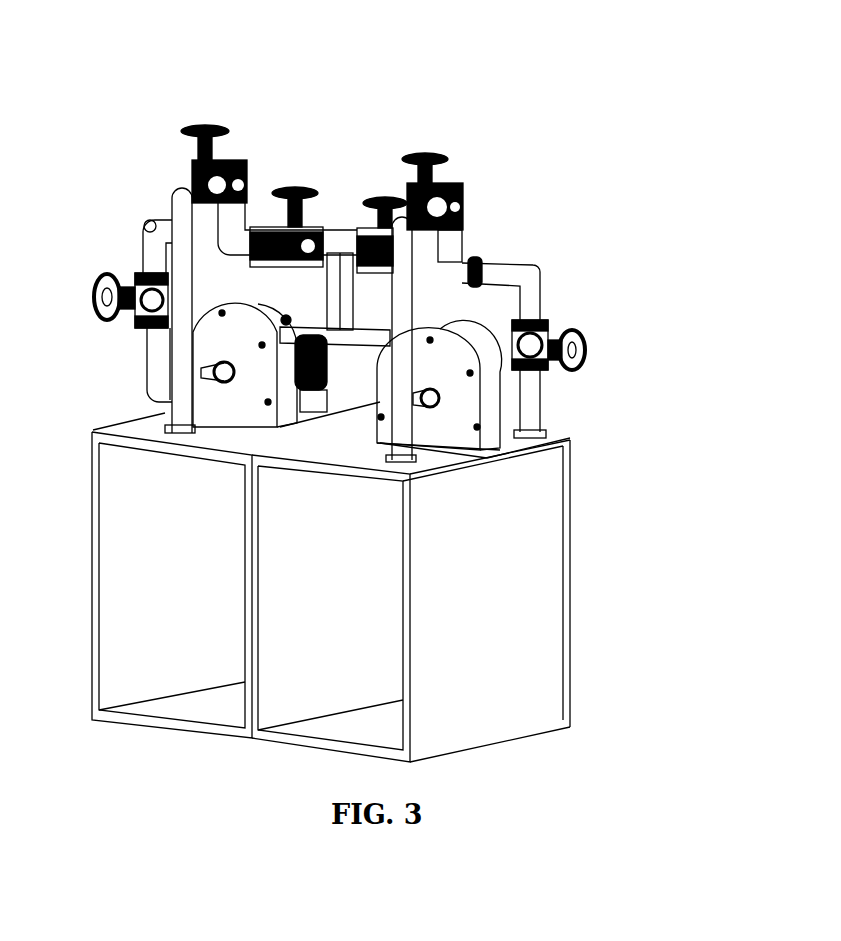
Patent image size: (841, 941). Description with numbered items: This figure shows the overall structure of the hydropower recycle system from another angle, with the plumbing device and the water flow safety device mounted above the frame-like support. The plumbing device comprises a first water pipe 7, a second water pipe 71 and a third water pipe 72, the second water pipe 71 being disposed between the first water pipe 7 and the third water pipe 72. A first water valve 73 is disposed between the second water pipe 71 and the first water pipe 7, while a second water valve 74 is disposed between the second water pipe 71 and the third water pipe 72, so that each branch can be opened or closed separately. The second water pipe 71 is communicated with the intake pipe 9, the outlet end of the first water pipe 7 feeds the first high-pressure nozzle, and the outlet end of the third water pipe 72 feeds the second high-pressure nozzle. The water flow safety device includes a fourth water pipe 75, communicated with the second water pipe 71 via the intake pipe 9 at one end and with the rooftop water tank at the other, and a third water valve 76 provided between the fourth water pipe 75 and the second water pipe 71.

The first water pipe 7 is at (371, 582).
The second water pipe 71 is at (551, 234).
The third water pipe 72 is at (324, 209).
The first water valve 73 is at (593, 386).
The second water valve 74 is at (337, 146).
The fourth water pipe 75 is at (471, 293).
The third water valve 76 is at (468, 100).
The intake pipe 9 is at (506, 139).